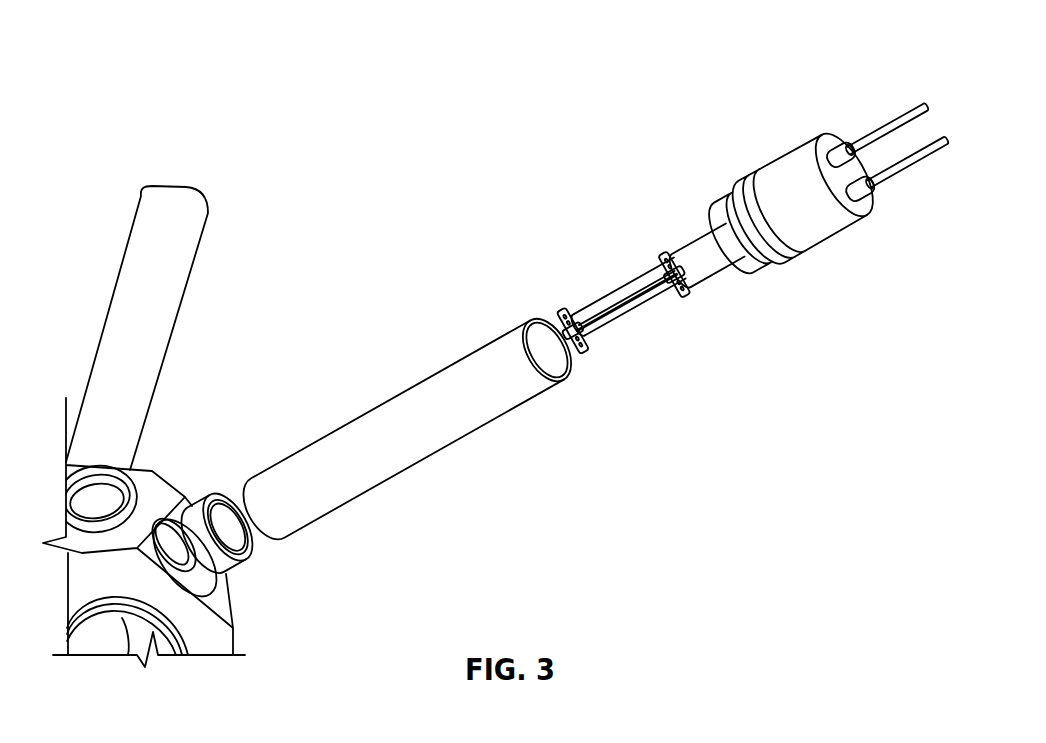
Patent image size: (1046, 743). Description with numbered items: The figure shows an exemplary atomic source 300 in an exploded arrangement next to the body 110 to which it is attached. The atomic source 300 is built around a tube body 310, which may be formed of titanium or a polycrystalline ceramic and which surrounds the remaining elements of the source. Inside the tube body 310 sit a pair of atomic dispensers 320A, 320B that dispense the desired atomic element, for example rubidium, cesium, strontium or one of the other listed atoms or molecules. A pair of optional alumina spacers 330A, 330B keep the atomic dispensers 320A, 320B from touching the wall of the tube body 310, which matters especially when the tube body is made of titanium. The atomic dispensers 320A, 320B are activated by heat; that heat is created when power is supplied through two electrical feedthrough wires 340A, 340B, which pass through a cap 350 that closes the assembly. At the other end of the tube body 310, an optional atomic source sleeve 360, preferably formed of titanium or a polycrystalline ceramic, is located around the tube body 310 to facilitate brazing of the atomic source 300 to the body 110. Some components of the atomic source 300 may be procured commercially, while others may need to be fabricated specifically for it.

The atomic source 300 is at (500, 356).
The body 110 is at (163, 438).
The tube body 310 is at (410, 468).
The atomic dispenser 320A is at (618, 287).
The atomic dispenser 320B is at (630, 316).
The alumina spacer 330A is at (578, 343).
The alumina spacer 330B is at (693, 297).
The electrical feedthrough wire 340A is at (885, 170).
The electrical feedthrough wire 340B is at (877, 132).
The cap 350 is at (742, 178).
The atomic source sleeve 360 is at (200, 495).